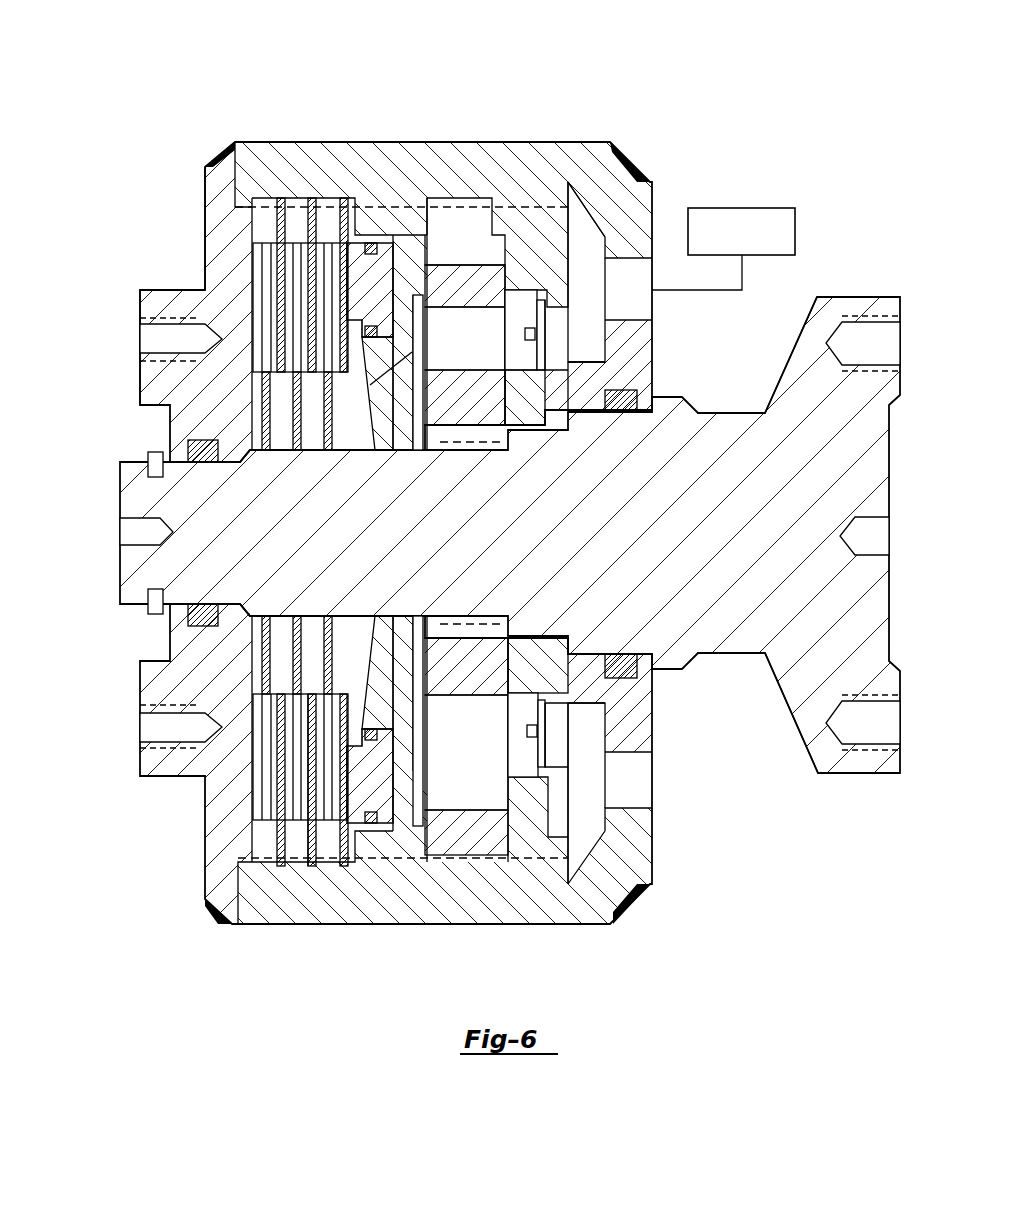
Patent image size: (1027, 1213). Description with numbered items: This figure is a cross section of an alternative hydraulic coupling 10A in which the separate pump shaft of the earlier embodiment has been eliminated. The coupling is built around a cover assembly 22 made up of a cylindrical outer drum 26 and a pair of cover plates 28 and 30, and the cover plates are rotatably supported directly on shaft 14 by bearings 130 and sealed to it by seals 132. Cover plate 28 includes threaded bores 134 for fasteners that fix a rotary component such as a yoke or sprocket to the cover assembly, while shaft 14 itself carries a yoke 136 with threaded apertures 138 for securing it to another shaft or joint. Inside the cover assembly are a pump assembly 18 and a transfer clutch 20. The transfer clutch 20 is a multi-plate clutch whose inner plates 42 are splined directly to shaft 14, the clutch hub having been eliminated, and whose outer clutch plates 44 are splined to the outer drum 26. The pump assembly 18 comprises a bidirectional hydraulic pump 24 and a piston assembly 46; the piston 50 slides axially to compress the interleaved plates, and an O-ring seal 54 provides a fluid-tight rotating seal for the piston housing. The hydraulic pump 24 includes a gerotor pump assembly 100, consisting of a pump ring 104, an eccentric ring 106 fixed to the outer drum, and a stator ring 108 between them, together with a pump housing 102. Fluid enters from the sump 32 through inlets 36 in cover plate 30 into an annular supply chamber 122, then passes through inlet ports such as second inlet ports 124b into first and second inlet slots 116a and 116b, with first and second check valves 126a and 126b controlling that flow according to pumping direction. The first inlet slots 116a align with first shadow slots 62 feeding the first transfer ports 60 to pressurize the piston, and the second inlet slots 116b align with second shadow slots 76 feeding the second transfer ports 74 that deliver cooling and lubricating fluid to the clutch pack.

The hydraulic coupling 10A is at (535, 114).
The shaft 14 is at (732, 470).
The pump assembly 18 is at (440, 872).
The transfer clutch 20 is at (325, 850).
The cover assembly 22 is at (402, 136).
The hydraulic pump 24 is at (497, 872).
The outer drum 26 is at (272, 155).
The cover plate 28 is at (232, 245).
The cover plate 30 is at (632, 340).
The sump 32 is at (745, 208).
The inlets 36 is at (622, 272).
The inner clutch plates 42 is at (328, 432).
The outer clutch plates 44 is at (318, 240).
The piston assembly 46 is at (376, 208).
The piston 50 is at (430, 266).
The O-ring seal 54 is at (382, 460).
The first transfer ports 60 is at (416, 744).
The first shadow slots 62 is at (418, 690).
The second transfer ports 74 is at (400, 412).
The second shadow slots 76 is at (430, 352).
The gerotor pump assembly 100 is at (465, 210).
The pump housing 102 is at (550, 380).
The pump ring 104 is at (465, 400).
The eccentric ring 106 is at (455, 842).
The stator ring 108 is at (500, 760).
The first inlet slots 116a is at (522, 262).
The second inlet slots 116b is at (545, 872).
The supply chamber 122 is at (602, 232).
The second inlet ports 124b is at (560, 680).
The first check valve 126a is at (515, 382).
The second check valve 126b is at (500, 650).
The bearings 130 is at (203, 465).
The seals 132 is at (188, 452).
The threaded bores 134 is at (185, 335).
The yoke 136 is at (815, 372).
The threaded apertures 138 is at (862, 325).